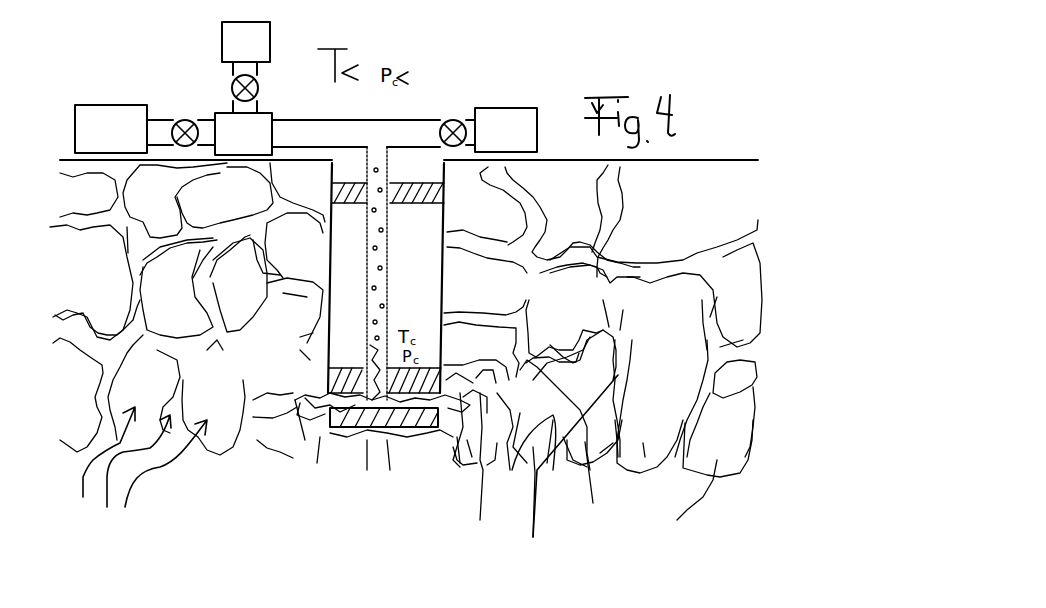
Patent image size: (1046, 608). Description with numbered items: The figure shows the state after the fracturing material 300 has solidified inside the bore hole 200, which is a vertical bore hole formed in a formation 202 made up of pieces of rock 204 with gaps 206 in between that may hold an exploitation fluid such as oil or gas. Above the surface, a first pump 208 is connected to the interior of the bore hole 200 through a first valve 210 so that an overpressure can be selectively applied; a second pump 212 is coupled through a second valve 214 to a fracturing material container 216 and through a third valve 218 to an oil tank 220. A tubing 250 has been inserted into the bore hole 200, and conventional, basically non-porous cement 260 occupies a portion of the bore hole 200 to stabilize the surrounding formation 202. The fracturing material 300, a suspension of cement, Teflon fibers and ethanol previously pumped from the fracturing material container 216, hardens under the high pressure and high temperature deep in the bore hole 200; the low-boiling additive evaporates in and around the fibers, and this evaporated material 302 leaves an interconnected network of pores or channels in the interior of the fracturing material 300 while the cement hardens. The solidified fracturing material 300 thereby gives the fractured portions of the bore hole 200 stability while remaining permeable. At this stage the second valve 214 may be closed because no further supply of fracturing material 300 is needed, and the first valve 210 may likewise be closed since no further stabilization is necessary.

The bore hole 200 is at (417, 267).
The formation 202 is at (138, 475).
The pieces of rock 204 is at (642, 447).
The gaps 206 is at (512, 470).
The first pump 208 is at (497, 105).
The first valve 210 is at (447, 118).
The second pump 212 is at (273, 112).
The second valve 214 is at (177, 117).
The fracturing material container 216 is at (100, 103).
The third valve 218 is at (237, 80).
The oil tank 220 is at (273, 27).
The tubing 250 is at (367, 250).
The cement 260 is at (337, 382).
The fracturing material 300 is at (355, 410).
The evaporated material 302 is at (382, 262).